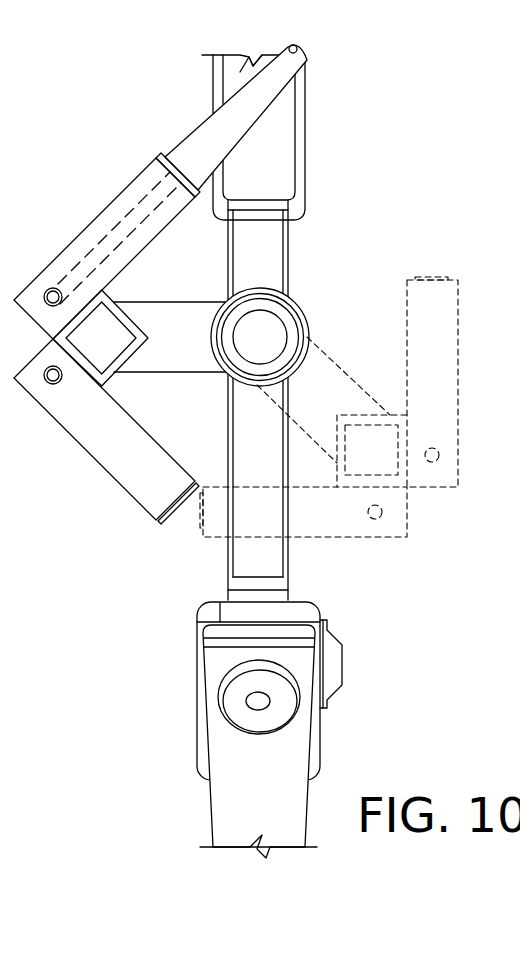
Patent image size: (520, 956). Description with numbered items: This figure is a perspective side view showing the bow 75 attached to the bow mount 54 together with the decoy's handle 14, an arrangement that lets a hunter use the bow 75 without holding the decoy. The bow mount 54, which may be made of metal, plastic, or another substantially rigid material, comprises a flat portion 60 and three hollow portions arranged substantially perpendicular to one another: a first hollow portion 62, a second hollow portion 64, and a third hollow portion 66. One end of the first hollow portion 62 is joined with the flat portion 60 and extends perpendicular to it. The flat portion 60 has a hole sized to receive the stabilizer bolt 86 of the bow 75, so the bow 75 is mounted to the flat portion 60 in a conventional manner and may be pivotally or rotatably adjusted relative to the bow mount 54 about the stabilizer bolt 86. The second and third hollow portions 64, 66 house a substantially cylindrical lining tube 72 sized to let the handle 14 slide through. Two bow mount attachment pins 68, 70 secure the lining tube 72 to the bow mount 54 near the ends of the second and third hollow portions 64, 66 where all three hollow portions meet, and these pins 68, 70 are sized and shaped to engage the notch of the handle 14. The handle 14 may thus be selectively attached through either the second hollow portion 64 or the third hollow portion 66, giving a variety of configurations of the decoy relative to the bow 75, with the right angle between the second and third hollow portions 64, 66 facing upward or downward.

The handle 14 is at (203, 140).
The bow mount 54 is at (52, 480).
The flat portion 60 is at (177, 317).
The first hollow portion 62 is at (127, 355).
The second hollow portion 64 is at (120, 470).
The third hollow portion 66 is at (122, 202).
The bow mount attachment pin 68 is at (52, 387).
The bow mount attachment pin 70 is at (47, 290).
The lining tube 72 is at (175, 512).
The bow 75 is at (277, 151).
The stabilizer bolt 86 is at (273, 327).